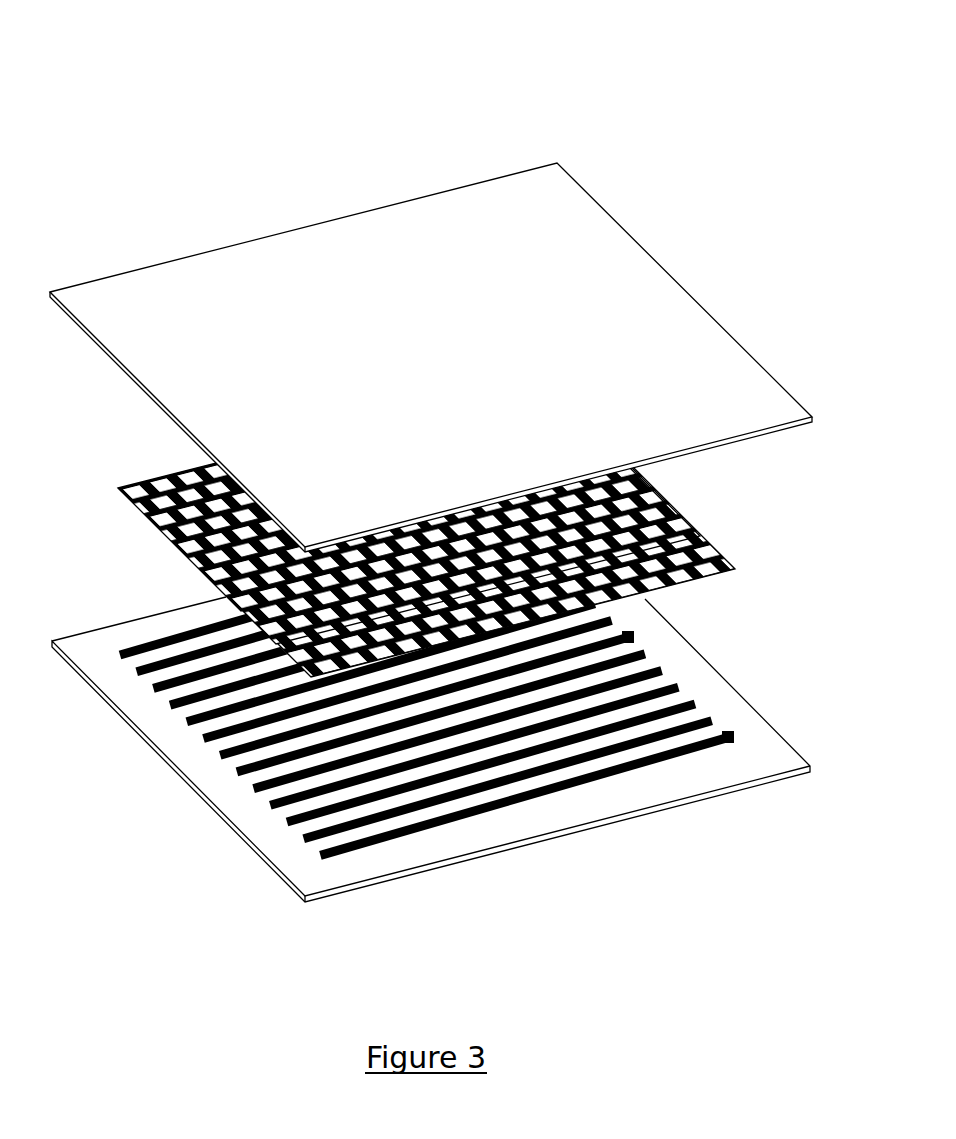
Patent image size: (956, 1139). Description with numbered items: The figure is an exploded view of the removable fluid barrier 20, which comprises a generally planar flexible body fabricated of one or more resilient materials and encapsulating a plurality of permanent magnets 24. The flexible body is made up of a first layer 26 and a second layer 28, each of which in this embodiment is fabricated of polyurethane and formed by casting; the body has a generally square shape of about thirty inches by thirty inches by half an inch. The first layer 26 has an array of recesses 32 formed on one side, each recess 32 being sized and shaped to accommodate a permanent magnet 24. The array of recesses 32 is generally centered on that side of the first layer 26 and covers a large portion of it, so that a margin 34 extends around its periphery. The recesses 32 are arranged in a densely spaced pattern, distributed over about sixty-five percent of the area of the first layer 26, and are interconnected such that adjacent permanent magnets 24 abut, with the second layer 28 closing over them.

The removable fluid barrier 20 is at (720, 63).
The permanent magnets 24 is at (667, 500).
The first layer 26 is at (687, 650).
The second layer 28 is at (670, 278).
The recesses 32 is at (701, 696).
The margin 34 is at (95, 648).